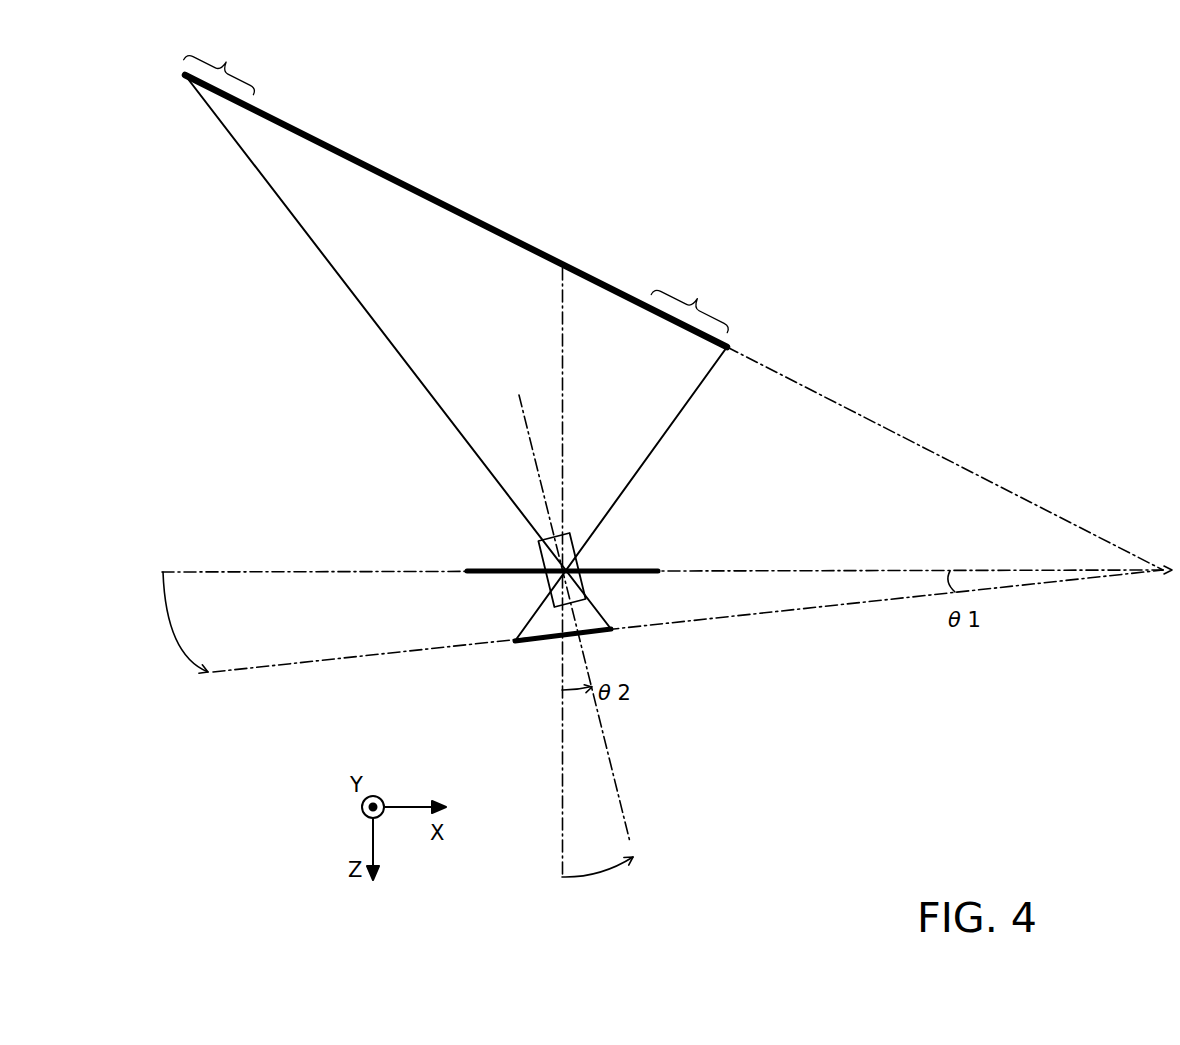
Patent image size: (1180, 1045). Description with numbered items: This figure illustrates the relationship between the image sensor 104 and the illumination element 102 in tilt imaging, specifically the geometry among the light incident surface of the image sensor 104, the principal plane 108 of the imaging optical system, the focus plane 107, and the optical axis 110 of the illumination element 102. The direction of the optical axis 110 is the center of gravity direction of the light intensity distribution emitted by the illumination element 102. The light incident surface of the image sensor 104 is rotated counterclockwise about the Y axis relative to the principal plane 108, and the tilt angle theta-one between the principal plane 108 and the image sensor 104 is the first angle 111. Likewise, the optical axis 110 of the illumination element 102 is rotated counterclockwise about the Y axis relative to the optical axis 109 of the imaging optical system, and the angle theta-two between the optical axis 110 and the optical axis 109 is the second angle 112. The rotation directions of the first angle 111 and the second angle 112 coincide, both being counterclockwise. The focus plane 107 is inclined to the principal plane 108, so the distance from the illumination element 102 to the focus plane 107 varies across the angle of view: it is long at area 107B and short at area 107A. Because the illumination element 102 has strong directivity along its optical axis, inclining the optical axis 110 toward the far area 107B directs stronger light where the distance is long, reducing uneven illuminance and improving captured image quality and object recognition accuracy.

The illumination element 102 is at (540, 553).
The image sensor 104 is at (540, 642).
The focus plane 107 is at (462, 210).
The area of the focus plane close to the illumination element 107A is at (693, 298).
The area of the focus plane far from the illumination element 107B is at (223, 62).
The principal plane 108 is at (498, 575).
The optical axis of the imaging optical system 109 is at (562, 348).
The optical axis of the illumination element 110 is at (520, 395).
The first angle 111 is at (254, 622).
The second angle 112 is at (616, 903).